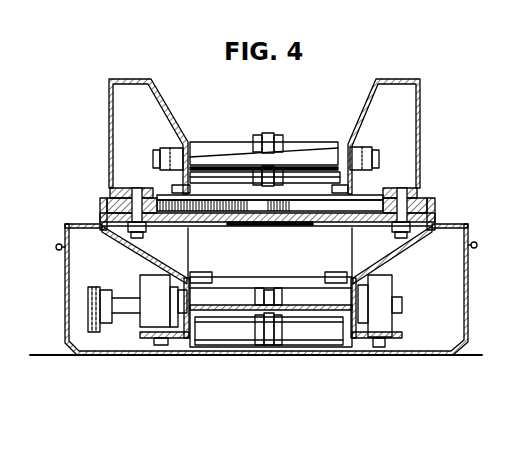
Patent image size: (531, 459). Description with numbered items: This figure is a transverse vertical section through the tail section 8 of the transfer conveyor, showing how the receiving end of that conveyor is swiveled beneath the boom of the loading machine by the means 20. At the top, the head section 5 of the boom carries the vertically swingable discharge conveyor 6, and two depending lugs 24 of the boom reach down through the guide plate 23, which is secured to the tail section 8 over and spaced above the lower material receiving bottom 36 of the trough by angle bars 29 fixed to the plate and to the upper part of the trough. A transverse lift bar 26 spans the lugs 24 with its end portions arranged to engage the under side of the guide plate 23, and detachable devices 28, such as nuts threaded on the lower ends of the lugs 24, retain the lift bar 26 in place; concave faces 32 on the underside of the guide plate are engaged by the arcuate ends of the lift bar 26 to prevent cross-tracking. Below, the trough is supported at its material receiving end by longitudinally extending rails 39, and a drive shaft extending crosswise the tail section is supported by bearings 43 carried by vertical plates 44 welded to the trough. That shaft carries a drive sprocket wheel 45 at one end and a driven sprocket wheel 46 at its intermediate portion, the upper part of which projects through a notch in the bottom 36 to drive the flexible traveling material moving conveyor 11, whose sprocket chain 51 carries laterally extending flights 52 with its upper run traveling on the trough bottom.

The head section 5 is at (420, 84).
The discharge conveyor 6 is at (300, 143).
The tail section 8 is at (470, 229).
The flexible traveling material moving conveyor 11 is at (186, 348).
The swiveling means 20 is at (428, 197).
The guide plate 23 is at (110, 190).
The depending lugs 24 is at (137, 196).
The transverse lift bar 26 is at (313, 226).
The detachable devices 28 is at (128, 230).
The angle bars 29 is at (100, 210).
The concave faces 32 is at (247, 224).
The lower material receiving bottom 36 is at (213, 308).
The rails 39 is at (136, 352).
The bearings 43 is at (152, 283).
The vertical plates 44 is at (178, 300).
The drive sprocket wheel 45 is at (97, 305).
The driven sprocket wheel 46 is at (272, 300).
The sprocket chain 51 is at (265, 345).
The flights 52 is at (322, 328).